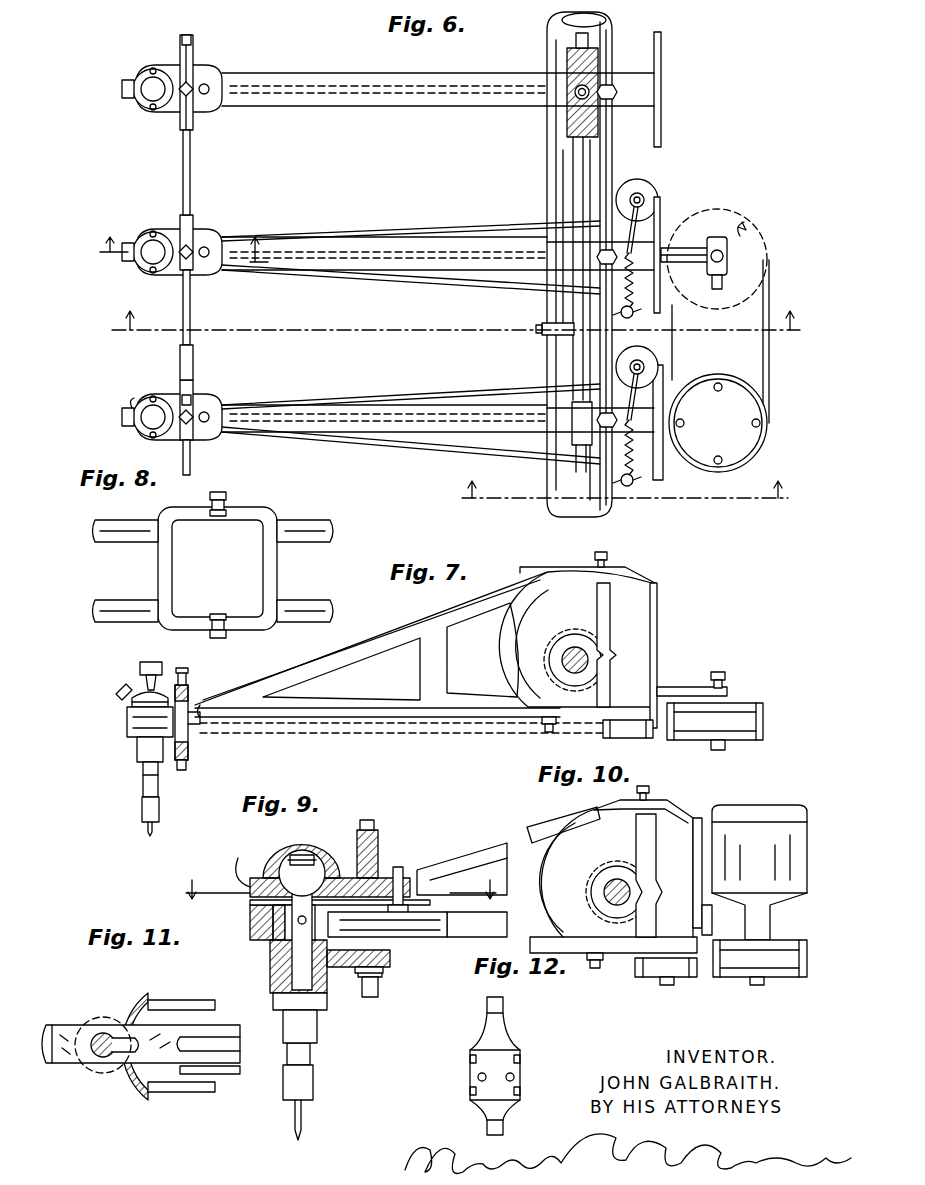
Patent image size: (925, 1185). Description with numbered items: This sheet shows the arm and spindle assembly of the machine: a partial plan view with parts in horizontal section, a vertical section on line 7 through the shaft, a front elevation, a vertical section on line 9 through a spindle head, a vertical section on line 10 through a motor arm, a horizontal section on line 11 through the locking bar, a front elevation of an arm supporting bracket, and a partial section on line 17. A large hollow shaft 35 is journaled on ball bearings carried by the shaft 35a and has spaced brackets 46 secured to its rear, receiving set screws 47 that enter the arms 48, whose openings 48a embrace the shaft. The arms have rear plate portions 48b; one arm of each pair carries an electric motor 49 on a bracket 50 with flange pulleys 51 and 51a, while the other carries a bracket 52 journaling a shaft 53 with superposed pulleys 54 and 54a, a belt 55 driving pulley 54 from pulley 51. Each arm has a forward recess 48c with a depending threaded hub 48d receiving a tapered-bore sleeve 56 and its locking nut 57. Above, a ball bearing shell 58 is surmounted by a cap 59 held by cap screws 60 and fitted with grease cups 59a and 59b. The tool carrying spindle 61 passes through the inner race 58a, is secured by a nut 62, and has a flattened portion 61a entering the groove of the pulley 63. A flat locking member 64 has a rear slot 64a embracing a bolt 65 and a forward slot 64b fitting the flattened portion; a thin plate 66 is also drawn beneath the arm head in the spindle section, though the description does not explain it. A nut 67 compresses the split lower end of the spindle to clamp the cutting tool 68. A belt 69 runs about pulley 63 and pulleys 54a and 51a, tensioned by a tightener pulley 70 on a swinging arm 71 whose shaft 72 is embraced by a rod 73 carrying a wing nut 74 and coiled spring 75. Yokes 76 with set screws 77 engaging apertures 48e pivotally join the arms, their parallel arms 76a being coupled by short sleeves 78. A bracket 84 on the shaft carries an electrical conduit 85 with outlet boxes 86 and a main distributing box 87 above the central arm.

In FIG. 6, the section line 7— 7 is at (455, 326).
In FIG. 6, the section line 9— 9 is at (177, 268).
In FIG. 6, the section line 10— 10 is at (627, 494).
In FIG. 9, the section line 11— 11 is at (344, 892).
In FIG. 9, the section line 17— 17 is at (324, 846).
In FIG. 6, the hollow shaft 35 is at (560, 170).
In FIG. 7, the hollow shaft 35 is at (575, 630).
In FIG. 10, the hollow shaft 35 is at (588, 878).
In FIG. 7, the shaft 35a is at (562, 660).
In FIG. 10, the shaft 35a is at (608, 900).
In FIG. 7, the brackets 46 is at (608, 618).
In FIG. 10, the brackets 46 is at (652, 848).
In FIG. 12, the brackets 46 is at (497, 1045).
In FIG. 6, the set screws 47 is at (610, 85).
In FIG. 7, the set screws 47 is at (606, 557).
In FIG. 10, the set screws 47 is at (650, 788).
In FIG. 6, the arms 48 is at (500, 104).
In FIG. 7, the arms 48 is at (372, 716).
In FIG. 10, the arms 48 is at (543, 826).
In FIG. 9, the arms 48 is at (478, 842).
In FIG. 11, the arms 48 is at (88, 1000).
In FIG. 7, the openings 48a is at (520, 600).
In FIG. 10, the openings 48a is at (570, 828).
In FIG. 6, the plate portions 48b is at (661, 135).
In FIG. 7, the plate portions 48b is at (660, 600).
In FIG. 10, the plate portions 48b is at (700, 818).
In FIG. 9, the recessed portions 48c is at (400, 875).
In FIG. 11, the recessed portions 48c is at (150, 1005).
In FIG. 7, the threaded hub 48d is at (140, 752).
In FIG. 9, the threaded hub 48d is at (280, 972).
In FIG. 9, the apertures 48e is at (390, 962).
In FIG. 6, the motor 49 is at (756, 462).
In FIG. 10, the motor 49 is at (759, 872).
In FIG. 10, the bracket 50 is at (703, 930).
In FIG. 10, the flange pulley 51 is at (778, 944).
In FIG. 10, the flange pulley 51a is at (770, 984).
In FIG. 6, the bracket 52 is at (690, 240).
In FIG. 7, the bracket 52 is at (680, 687).
In FIG. 6, the shaft 53 is at (722, 242).
In FIG. 7, the shaft 53 is at (722, 682).
In FIG. 6, the flange pulley 54 is at (764, 270).
In FIG. 7, the flange pulley 54 is at (766, 712).
In FIG. 7, the flange pulley 54a is at (766, 745).
In FIG. 6, the belt 55 is at (768, 370).
In FIG. 9, the sleeve 56 is at (318, 1028).
In FIG. 9, the locking nut 57 is at (272, 1002).
In FIG. 9, the ball bearing shell 58 is at (330, 865).
In FIG. 9, the inner race 58a is at (316, 855).
In FIG. 7, the cap member 59 is at (160, 676).
In FIG. 9, the cap member 59 is at (278, 864).
In FIG. 6, the oil or grease cup 59a is at (165, 233).
In FIG. 7, the oil or grease cup 59a is at (170, 690).
In FIG. 6, the oil or grease cup 59b is at (130, 420).
In FIG. 7, the oil or grease cup 59b is at (126, 692).
In FIG. 6, the cap screws 60 is at (150, 236).
In FIG. 7, the tool carrying spindle 61 is at (158, 790).
In FIG. 9, the tool carrying spindle 61 is at (290, 935).
In FIG. 9, the flattened portion 61a is at (270, 914).
In FIG. 11, the flattened portion 61a is at (80, 1085).
In FIG. 9, the nut 62 is at (286, 857).
In FIG. 9, the pulley 63 is at (400, 937).
In FIG. 11, the pulley 63 is at (108, 1030).
In FIG. 6, the locking member 64 is at (137, 412).
In FIG. 7, the locking member 64 is at (127, 712).
In FIG. 9, the locking member 64 is at (240, 886).
In FIG. 11, the locking member 64 is at (178, 1060).
In FIG. 11, the slot 64a is at (205, 1063).
In FIG. 11, the slot 64b is at (118, 1068).
In FIG. 6, the bolt 65 is at (210, 245).
In FIG. 7, the bolt 65 is at (200, 727).
In FIG. 9, the bolt 65 is at (400, 866).
In FIG. 9, the plate 66 is at (452, 903).
In FIG. 7, the nut 67 is at (143, 810).
In FIG. 9, the nut 67 is at (314, 1080).
In FIG. 7, the cutting tool 68 is at (155, 830).
In FIG. 9, the cutting tool 68 is at (304, 1124).
In FIG. 6, the belt 69 is at (396, 277).
In FIG. 7, the belt 69 is at (464, 732).
In FIG. 9, the belt 69 is at (468, 930).
In FIG. 11, the belt 69 is at (220, 1084).
In FIG. 6, the tightener pulley 70 is at (622, 186).
In FIG. 7, the tightener pulley 70 is at (640, 738).
In FIG. 10, the tightener pulley 70 is at (678, 979).
In FIG. 6, the swinging arm 71 is at (640, 194).
In FIG. 6, the shaft 72 is at (656, 204).
In FIG. 10, the shaft 72 is at (666, 980).
In FIG. 6, the rod 73 is at (663, 222).
In FIG. 6, the wing nut 74 is at (628, 312).
In FIG. 6, the coiled spring 75 is at (639, 364).
In FIG. 6, the yokes 76 is at (195, 115).
In FIG. 8, the yokes 76 is at (258, 512).
In FIG. 7, the yokes 76 is at (190, 668).
In FIG. 9, the yokes 76 is at (382, 990).
In FIG. 6, the parallel arms 76a is at (193, 170).
In FIG. 8, the parallel arms 76a is at (133, 528).
In FIG. 7, the parallel arms 76a is at (188, 752).
In FIG. 6, the set screws 77 is at (199, 413).
In FIG. 8, the set screws 77 is at (224, 530).
In FIG. 7, the set screws 77 is at (188, 672).
In FIG. 9, the set screws 77 is at (378, 826).
In FIG. 6, the short sleeves 78 is at (193, 352).
In FIG. 6, the bracket 84 is at (545, 334).
In FIG. 6, the electrical conduit 85 is at (574, 312).
In FIG. 6, the outlet boxes 86 is at (575, 430).
In FIG. 6, the main distributing box 87 is at (572, 120).